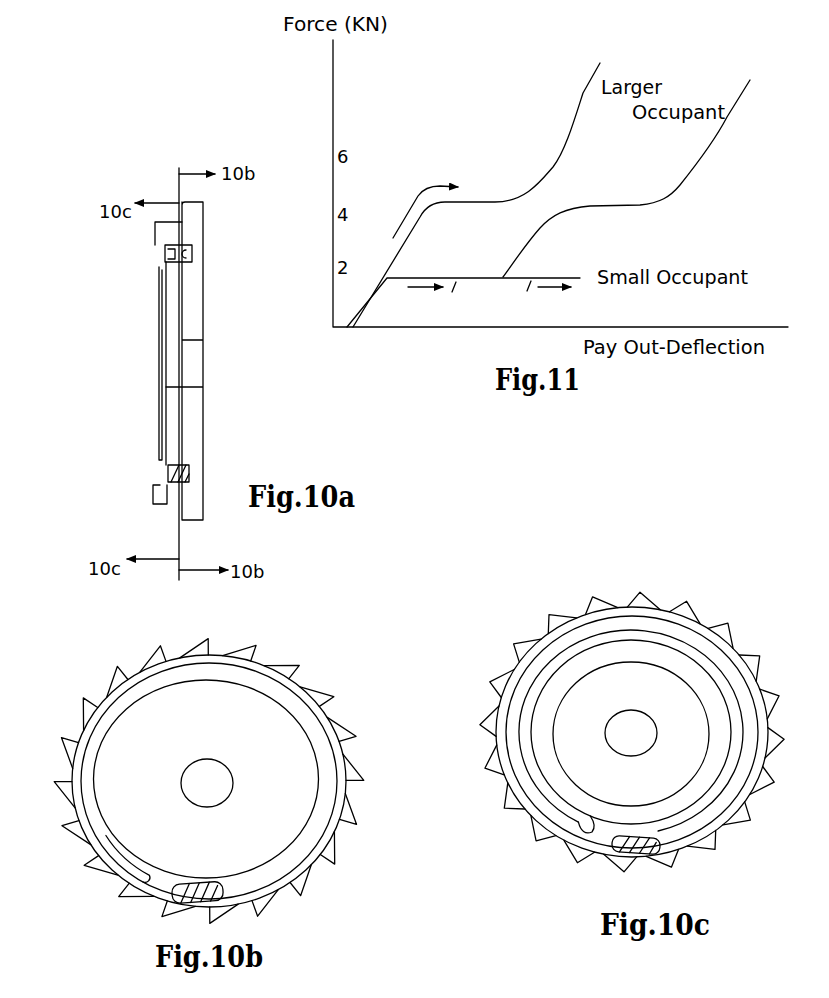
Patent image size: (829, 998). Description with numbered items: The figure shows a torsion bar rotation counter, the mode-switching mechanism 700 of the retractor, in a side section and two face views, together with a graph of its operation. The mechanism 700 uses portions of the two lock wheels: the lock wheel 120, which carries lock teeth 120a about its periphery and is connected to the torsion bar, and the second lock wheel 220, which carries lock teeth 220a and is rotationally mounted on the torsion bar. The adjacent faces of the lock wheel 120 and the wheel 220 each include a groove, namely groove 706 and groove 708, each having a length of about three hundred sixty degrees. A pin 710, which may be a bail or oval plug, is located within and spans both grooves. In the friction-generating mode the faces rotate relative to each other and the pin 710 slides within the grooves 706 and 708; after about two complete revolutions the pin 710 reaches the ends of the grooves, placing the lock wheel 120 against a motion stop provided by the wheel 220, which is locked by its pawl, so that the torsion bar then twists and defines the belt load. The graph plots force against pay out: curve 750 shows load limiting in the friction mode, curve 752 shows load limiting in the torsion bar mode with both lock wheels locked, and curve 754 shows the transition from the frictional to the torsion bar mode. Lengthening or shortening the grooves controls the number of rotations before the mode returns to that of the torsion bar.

In FIG. 10A, the lock wheel 120 is at (158, 267).
In FIG. 10C, the lock wheel 120 is at (633, 600).
In FIG. 10C, the lock teeth 120a is at (722, 620).
In FIG. 10A, the second lock wheel 220 is at (191, 298).
In FIG. 10B, the second lock wheel 220 is at (350, 792).
In FIG. 10B, the lock teeth 220a is at (350, 766).
In FIG. 10A, the mode-switching mechanism 700 is at (146, 348).
In FIG. 10B, the mode-switching mechanism 700 is at (268, 648).
In FIG. 10C, the mode-switching mechanism 700 is at (496, 659).
In FIG. 10A, the groove 706 is at (165, 250).
In FIG. 10B, the groove 706 is at (277, 695).
In FIG. 10A, the groove 708 is at (192, 251).
In FIG. 10C, the groove 708 is at (545, 657).
In FIG. 10A, the pin 710 is at (168, 473).
In FIG. 10B, the pin 710 is at (196, 883).
In FIG. 10C, the pin 710 is at (634, 855).
In FIG. 11, the curve 750 is at (463, 302).
In FIG. 11, the curve 752 is at (567, 140).
In FIG. 11, the curve 754 is at (673, 193).